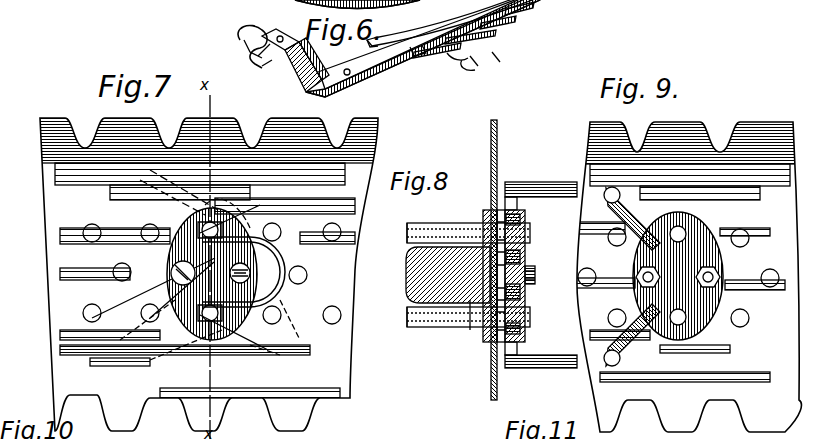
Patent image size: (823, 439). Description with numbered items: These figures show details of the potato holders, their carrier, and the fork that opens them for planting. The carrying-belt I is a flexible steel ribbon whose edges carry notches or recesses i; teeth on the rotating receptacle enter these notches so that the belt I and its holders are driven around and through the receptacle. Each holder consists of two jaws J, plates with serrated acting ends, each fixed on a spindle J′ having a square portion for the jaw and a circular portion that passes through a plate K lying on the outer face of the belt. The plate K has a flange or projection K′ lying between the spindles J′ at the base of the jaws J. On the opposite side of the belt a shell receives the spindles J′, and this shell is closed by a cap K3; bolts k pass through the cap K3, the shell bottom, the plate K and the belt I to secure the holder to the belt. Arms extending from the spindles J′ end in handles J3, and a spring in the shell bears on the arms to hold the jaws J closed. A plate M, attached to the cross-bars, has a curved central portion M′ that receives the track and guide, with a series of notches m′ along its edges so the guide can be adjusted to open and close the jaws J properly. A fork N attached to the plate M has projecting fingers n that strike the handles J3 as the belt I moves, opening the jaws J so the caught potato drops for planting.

In FIG. 7, the notches or recesses i is at (208, 281).
In FIG. 9, the notches or recesses i is at (677, 280).
In FIG. 7, the carrying-belt I is at (210, 274).
In FIG. 8, the carrying-belt I is at (497, 150).
In FIG. 9, the carrying-belt I is at (686, 276).
In FIG. 7, the holes in standard plate I′ is at (143, 229).
In FIG. 9, the holes in standard plate I′ is at (592, 272).
In FIG. 7, the jaws or holders J is at (285, 250).
In FIG. 8, the jaws or holders J is at (468, 276).
In FIG. 7, the spindle J′ is at (225, 225).
In FIG. 8, the spindle J′ is at (408, 222).
In FIG. 8, the handle J3 is at (541, 276).
In FIG. 9, the handle J3 is at (610, 200).
In FIG. 7, the plate K is at (172, 272).
In FIG. 8, the plate K is at (470, 203).
In FIG. 7, the bolts k is at (187, 282).
In FIG. 9, the bolts k is at (722, 270).
In FIG. 8, the flange or projection K′ is at (408, 255).
In FIG. 8, the cap K3 is at (527, 296).
In FIG. 9, the cap K3 is at (705, 328).
In FIG. 6, the fork N is at (252, 44).
In FIG. 6, the projecting ends or fingers n is at (248, 66).
In FIG. 6, the plate M is at (558, 16).
In FIG. 6, the curved central portion M′ is at (453, 28).
In FIG. 6, the notches m′ is at (473, 43).